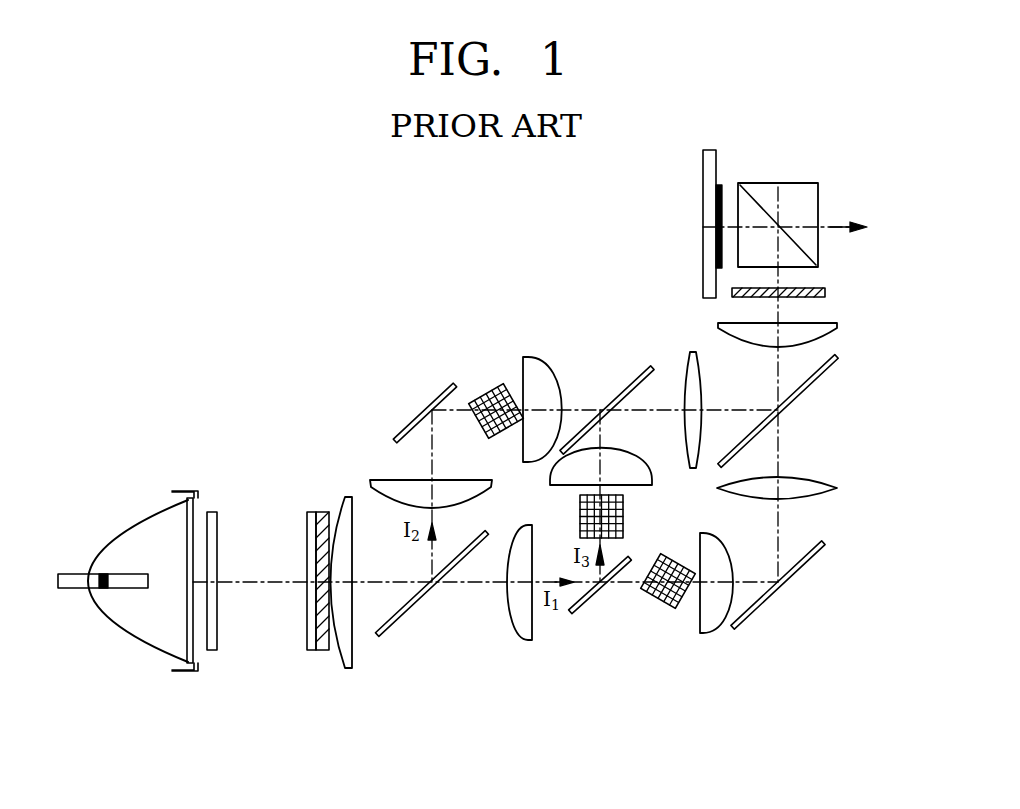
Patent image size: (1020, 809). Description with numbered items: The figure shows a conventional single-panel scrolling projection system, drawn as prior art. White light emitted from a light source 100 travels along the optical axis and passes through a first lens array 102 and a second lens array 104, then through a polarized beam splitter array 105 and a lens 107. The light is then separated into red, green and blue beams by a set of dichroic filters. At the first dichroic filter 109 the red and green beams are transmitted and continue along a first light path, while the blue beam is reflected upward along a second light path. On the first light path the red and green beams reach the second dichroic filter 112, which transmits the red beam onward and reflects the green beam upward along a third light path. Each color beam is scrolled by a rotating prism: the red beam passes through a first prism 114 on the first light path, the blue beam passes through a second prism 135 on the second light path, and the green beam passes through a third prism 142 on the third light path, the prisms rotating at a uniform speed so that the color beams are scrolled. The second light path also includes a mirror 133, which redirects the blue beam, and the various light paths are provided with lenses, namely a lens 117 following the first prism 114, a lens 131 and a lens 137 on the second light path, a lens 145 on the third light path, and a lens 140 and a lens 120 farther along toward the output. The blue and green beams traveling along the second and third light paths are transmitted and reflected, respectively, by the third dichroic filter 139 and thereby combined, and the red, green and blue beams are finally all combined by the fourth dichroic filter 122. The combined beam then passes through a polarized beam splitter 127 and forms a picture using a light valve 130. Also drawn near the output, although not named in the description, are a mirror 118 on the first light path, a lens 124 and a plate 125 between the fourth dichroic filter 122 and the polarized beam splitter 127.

The light source 100 is at (140, 532).
The first lens array 102 is at (213, 537).
The second lens array 104 is at (310, 648).
The polarized beam splitter array 105 is at (320, 645).
The lens 107 is at (343, 647).
The first dichroic filter 109 is at (408, 612).
The second dichroic filter 112 is at (590, 595).
The first prism 114 is at (668, 607).
The lens 117 is at (708, 617).
The mirror 118 is at (768, 593).
The lens 120 is at (837, 488).
The fourth dichroic filter 122 is at (800, 397).
The lens 124 is at (828, 330).
The polarizer 125 is at (825, 292).
The polarized beam splitter 127 is at (780, 183).
The light valve 130 is at (703, 225).
The lens 131 is at (378, 482).
The mirror 133 is at (418, 412).
The second prism 135 is at (493, 385).
The lens 137 is at (530, 368).
The third dichroic filter 139 is at (620, 390).
The lens 140 is at (695, 357).
The third prism 142 is at (580, 512).
The lens 145 is at (637, 480).